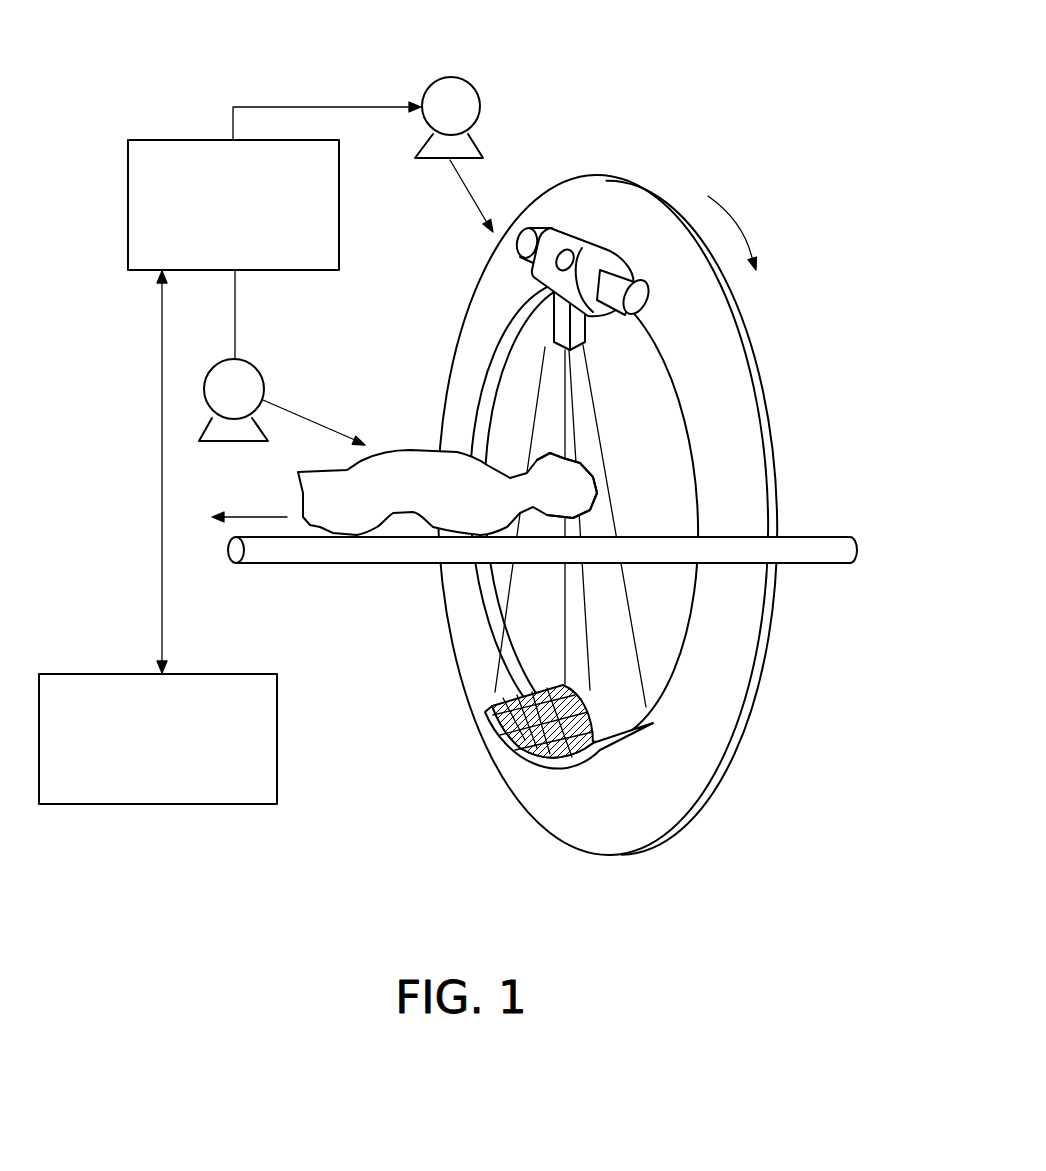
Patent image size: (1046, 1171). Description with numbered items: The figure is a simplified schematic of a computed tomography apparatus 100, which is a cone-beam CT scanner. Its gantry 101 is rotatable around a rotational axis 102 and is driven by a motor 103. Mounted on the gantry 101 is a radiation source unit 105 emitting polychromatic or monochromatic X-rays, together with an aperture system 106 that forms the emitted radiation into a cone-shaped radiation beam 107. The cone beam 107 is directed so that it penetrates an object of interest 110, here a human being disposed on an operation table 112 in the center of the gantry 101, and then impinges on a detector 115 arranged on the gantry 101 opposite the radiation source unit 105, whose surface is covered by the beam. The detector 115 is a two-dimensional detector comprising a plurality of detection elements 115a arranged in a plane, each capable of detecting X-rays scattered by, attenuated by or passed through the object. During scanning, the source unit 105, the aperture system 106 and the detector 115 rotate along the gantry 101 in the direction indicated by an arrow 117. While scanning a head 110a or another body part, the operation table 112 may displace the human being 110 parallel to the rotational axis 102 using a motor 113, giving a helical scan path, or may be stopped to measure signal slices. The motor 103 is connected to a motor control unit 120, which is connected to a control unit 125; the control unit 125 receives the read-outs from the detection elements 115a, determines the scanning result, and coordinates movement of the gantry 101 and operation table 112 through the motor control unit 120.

The computed tomography apparatus 100 is at (704, 72).
The gantry 101 is at (743, 663).
The rotational axis 102 is at (259, 517).
The motor 103 is at (481, 105).
The radiation source unit 105 is at (596, 236).
The aperture system 106 is at (562, 322).
The cone-shaped radiation beam 107 is at (602, 435).
The object of interest 110 is at (488, 469).
The head 110a is at (598, 490).
The operation table 112 is at (829, 540).
The motor 113 is at (264, 389).
The detector 115 is at (552, 740).
The detection elements 115a is at (528, 690).
The arrow 117 is at (740, 207).
The motor control unit 120 is at (176, 140).
The control unit 125 is at (208, 674).